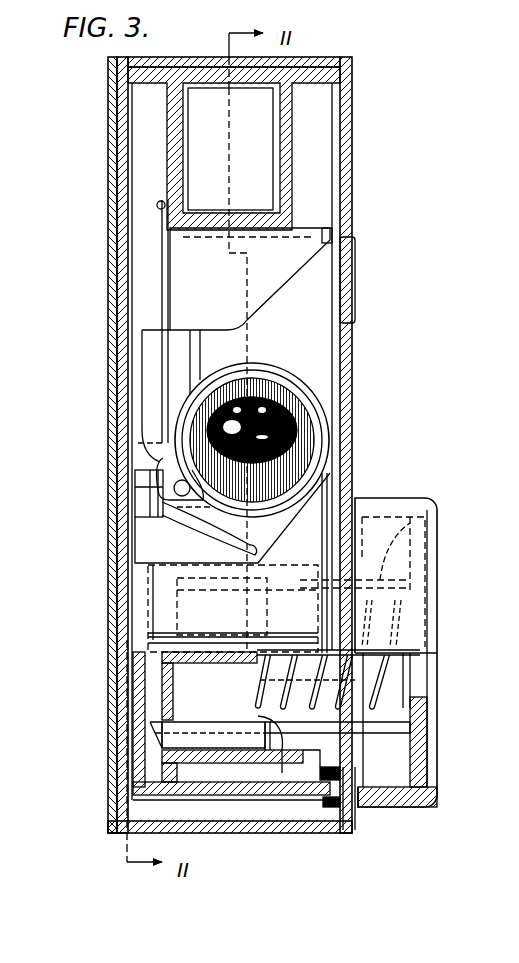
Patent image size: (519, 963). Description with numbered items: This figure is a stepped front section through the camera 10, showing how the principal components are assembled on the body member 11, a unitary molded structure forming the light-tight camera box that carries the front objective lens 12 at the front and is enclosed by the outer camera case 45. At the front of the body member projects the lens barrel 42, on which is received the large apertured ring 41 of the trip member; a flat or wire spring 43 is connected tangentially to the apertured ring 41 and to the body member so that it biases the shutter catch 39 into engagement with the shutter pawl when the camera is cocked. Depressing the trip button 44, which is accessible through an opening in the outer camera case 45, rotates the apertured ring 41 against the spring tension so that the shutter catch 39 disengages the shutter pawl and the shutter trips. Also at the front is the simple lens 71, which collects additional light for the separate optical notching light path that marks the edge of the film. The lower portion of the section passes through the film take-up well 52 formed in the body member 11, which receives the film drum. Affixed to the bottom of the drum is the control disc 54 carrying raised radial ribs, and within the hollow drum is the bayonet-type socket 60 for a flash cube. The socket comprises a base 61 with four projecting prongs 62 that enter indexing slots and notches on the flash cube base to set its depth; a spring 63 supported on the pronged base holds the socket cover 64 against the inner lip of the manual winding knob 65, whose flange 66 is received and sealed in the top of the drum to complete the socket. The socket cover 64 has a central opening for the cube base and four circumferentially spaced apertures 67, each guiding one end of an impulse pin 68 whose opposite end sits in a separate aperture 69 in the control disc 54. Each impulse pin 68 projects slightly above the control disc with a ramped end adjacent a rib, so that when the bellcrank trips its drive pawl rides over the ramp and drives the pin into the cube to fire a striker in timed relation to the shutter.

The camera 10 is at (68, 172).
The body member 11 is at (132, 314).
The front objective lens 12 is at (307, 442).
The shutter catch 39 is at (136, 535).
The apertured ring 41 is at (280, 367).
The lens barrel 42 is at (289, 393).
The flat or wire spring 43 is at (170, 280).
The trip button 44 is at (355, 281).
The outer camera case 45 is at (110, 723).
The film take-up well 52 is at (235, 773).
The control disc 54 is at (167, 766).
The bayonet-type socket 60 is at (452, 615).
The base 61 is at (259, 722).
The prongs 62 is at (275, 601).
The spring 63 is at (410, 670).
The socket cover 64 is at (427, 753).
The manual winding knob 65 is at (420, 802).
The flange 66 is at (313, 752).
The apertures 67 is at (440, 583).
The impulse pin 68 is at (222, 722).
The aperture 69 is at (172, 720).
The simple lens 71 is at (175, 484).